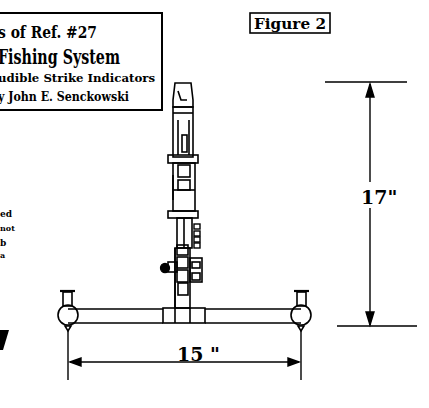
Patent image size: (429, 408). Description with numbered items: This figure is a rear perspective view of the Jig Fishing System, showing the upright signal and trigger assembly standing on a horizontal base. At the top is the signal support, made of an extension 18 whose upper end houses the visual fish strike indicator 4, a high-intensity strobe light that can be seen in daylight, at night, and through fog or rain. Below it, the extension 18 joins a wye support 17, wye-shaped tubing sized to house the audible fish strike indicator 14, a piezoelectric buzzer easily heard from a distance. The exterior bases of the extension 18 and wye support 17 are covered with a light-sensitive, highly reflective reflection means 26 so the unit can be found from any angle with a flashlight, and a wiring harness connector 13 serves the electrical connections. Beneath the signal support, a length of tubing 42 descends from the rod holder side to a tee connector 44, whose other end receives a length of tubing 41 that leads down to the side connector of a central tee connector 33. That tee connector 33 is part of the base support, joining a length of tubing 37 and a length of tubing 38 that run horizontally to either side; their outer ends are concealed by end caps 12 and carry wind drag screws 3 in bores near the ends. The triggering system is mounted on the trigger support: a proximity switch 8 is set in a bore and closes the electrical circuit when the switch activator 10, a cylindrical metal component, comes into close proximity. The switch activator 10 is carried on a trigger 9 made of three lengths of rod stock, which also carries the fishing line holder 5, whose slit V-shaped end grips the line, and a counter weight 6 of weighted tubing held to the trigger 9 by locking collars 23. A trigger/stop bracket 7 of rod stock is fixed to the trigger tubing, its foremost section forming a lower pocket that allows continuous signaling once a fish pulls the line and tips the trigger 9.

The wind drag screws 3 is at (66, 290).
The visual fish strike indicator 4 is at (187, 84).
The fishing line holder 5 is at (200, 229).
The counter weight 6 is at (200, 240).
The trigger/stop bracket 7 is at (202, 267).
The proximity switch 8 is at (164, 263).
The trigger 9 is at (267, 250).
The switch activator 10 is at (162, 267).
The end cap 12 is at (57, 315).
The wiring harness connector 13 is at (190, 157).
The audible fish strike indicator 14 is at (189, 192).
The wye support 17 is at (172, 192).
The extension 18 is at (187, 130).
The locking collars 23 is at (200, 233).
The reflection means 26 is at (168, 158).
The tee connector 33 is at (172, 325).
The length of tubing 37 is at (256, 308).
The length of tubing 38 is at (118, 308).
The length of tubing 41 is at (174, 277).
The length of tubing 42 is at (173, 233).
The tee connector 44 is at (193, 283).